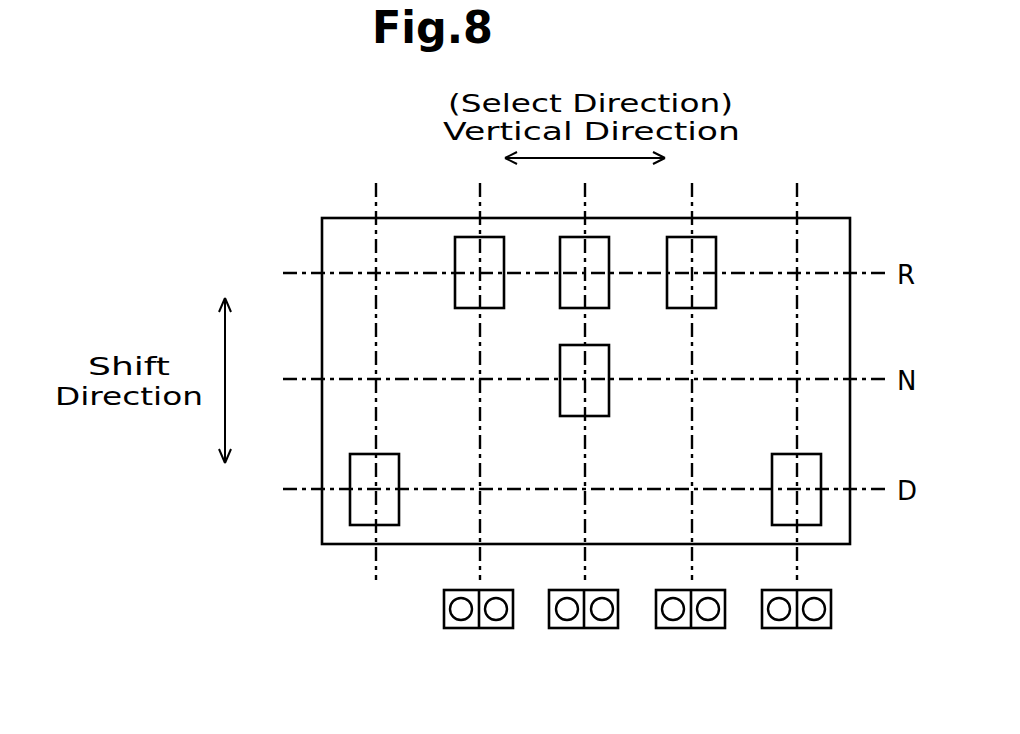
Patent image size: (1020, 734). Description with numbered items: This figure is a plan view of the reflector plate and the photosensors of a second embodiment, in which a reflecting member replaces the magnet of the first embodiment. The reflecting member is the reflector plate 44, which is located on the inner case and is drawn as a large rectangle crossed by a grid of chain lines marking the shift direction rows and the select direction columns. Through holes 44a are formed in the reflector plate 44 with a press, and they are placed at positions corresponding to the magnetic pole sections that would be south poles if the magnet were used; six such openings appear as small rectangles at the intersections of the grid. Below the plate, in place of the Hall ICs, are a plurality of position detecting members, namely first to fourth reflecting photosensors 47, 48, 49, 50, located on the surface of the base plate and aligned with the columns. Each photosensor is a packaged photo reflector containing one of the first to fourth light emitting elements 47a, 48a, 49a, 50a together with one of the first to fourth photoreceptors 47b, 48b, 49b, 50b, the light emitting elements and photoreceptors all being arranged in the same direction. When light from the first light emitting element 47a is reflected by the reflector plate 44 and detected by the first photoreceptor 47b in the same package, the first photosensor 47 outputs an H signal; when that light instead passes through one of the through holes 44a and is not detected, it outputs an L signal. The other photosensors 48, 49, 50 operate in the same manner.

The reflector plate 44 is at (829, 218).
The through holes 44a is at (717, 248).
The first reflecting photosensor 47 is at (475, 647).
The first light emitting element 47a is at (460, 630).
The first photoreceptor 47b is at (496, 630).
The second reflecting photosensor 48 is at (579, 647).
The second light emitting element 48a is at (566, 630).
The second photoreceptor 48b is at (603, 630).
The third reflecting photosensor 49 is at (680, 647).
The third light emitting element 49a is at (673, 630).
The third photoreceptor 49b is at (709, 630).
The fourth reflecting photosensor 50 is at (795, 646).
The fourth light emitting element 50a is at (779, 630).
The fourth photoreceptor 50b is at (815, 630).